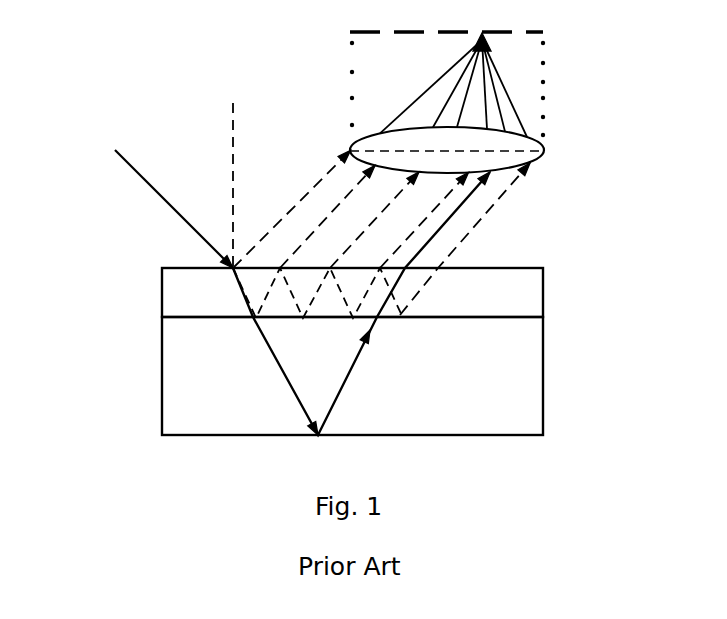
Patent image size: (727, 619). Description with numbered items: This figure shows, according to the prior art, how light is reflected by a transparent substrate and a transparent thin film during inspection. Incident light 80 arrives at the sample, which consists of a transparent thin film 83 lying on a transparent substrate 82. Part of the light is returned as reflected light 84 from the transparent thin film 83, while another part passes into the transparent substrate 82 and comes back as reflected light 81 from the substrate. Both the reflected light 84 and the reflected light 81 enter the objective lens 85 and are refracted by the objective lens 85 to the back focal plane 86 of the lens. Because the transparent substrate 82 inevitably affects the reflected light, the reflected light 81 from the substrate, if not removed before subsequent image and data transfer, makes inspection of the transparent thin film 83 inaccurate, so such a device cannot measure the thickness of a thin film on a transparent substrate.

The incident light 80 is at (116, 175).
The light reflected from the substrate 81 is at (355, 382).
The transparent substrate 82 is at (531, 392).
The transparent thin film 83 is at (531, 297).
The light reflected from the transparent thin film 84 is at (491, 234).
The objective lens 85 is at (552, 155).
The back focal plane 86 is at (548, 33).